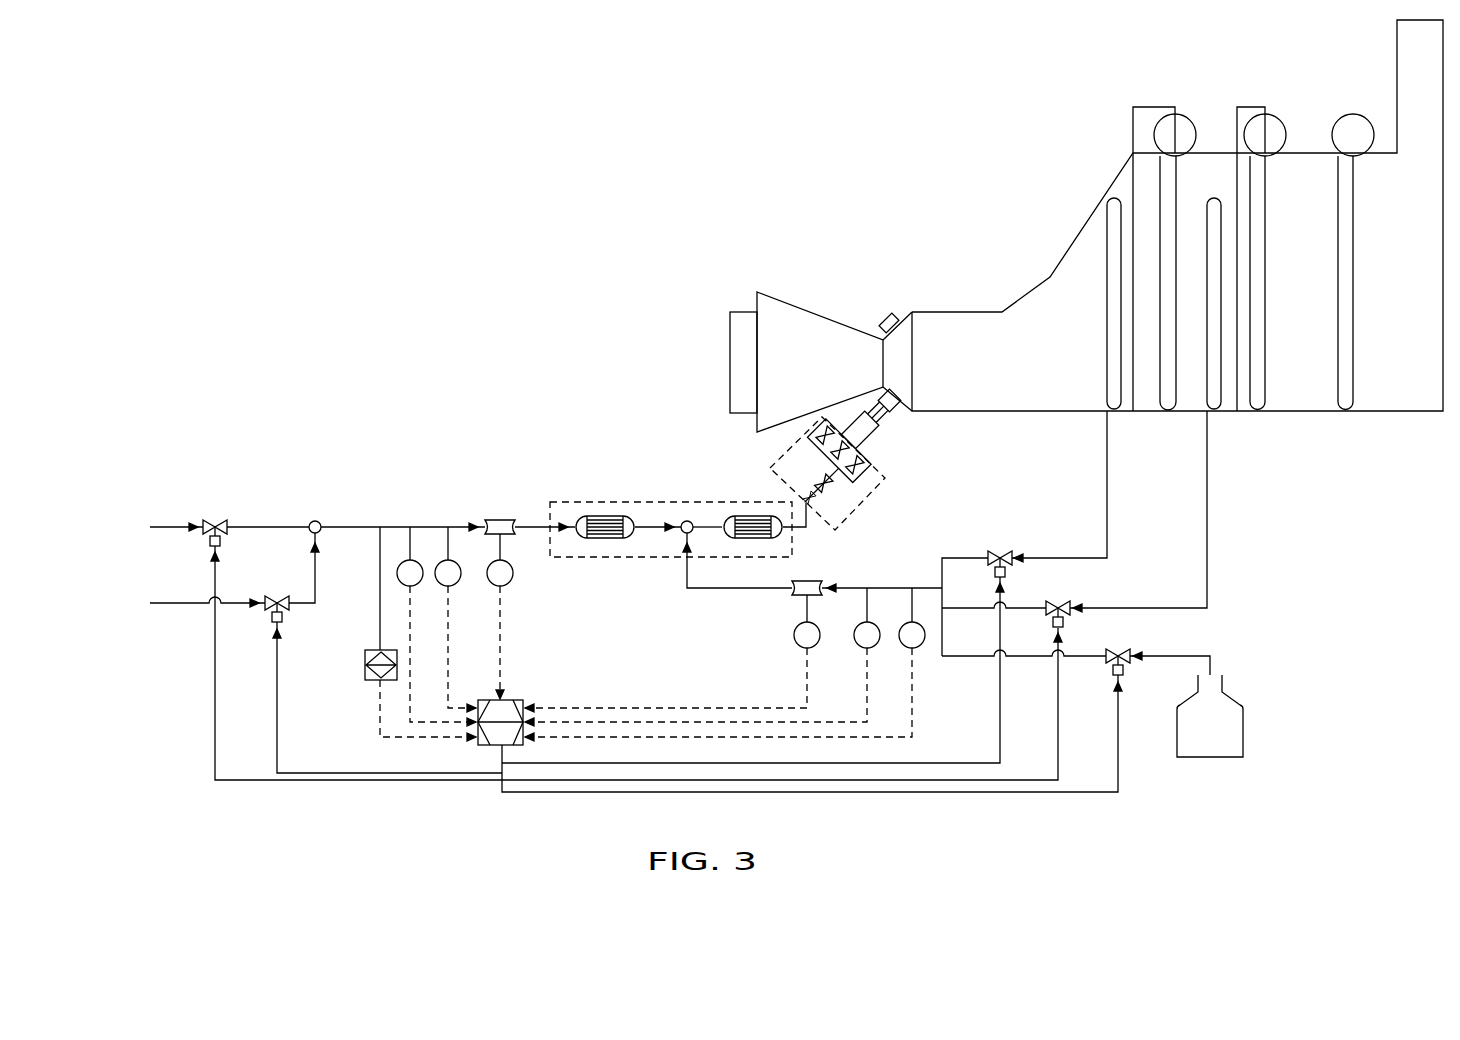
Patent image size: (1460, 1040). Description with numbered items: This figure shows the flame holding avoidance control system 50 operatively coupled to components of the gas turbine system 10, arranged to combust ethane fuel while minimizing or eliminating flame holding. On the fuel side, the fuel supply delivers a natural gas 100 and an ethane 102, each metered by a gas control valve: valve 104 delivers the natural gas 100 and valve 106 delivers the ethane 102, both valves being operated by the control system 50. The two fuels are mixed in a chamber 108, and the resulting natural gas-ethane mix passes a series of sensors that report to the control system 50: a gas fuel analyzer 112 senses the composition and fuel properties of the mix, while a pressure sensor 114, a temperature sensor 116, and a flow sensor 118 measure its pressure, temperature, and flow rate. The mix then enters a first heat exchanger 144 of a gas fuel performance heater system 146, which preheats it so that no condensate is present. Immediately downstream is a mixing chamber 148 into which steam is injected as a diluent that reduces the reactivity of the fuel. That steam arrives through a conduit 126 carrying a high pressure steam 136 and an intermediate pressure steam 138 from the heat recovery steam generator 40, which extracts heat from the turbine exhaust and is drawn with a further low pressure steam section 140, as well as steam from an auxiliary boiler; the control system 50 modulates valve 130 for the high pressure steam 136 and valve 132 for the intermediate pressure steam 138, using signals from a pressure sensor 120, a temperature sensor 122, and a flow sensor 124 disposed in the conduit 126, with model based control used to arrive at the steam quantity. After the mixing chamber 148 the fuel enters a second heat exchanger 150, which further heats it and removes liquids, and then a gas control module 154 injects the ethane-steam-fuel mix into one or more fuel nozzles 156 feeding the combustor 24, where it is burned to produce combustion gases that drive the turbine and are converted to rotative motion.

The gas turbine system 10 is at (788, 268).
The combustor 24 is at (903, 336).
The heat recovery steam generator (HRSG) system 40 is at (1073, 185).
The control system 50 is at (487, 745).
The natural gas 100 is at (118, 473).
The ethane 102 is at (118, 606).
The valve 104 is at (222, 538).
The valve 106 is at (286, 614).
The chamber 108 is at (320, 520).
The gas fuel analyzer 112 is at (365, 663).
The pressure sensor 114 is at (415, 587).
The temperature sensor 116 is at (455, 587).
The flow sensor 118 is at (512, 583).
The pressure sensor 120 is at (920, 645).
The temperature sensor 122 is at (855, 642).
The flow sensor 124 is at (795, 627).
The conduit 126 is at (733, 590).
The valve 130 is at (1008, 552).
The valve 132 is at (1047, 610).
The high pressure steam 136 is at (1190, 117).
The intermediate pressure steam 138 is at (1280, 117).
The LP steam drum 140 is at (1355, 114).
The first heat exchanger 144 is at (603, 514).
The gas fuel performance heater system 146 is at (592, 558).
The mixing chamber 148 is at (683, 537).
The second heat exchanger 150 is at (760, 538).
The gas control module 154 is at (880, 465).
The fuel nozzles 156 is at (885, 320).